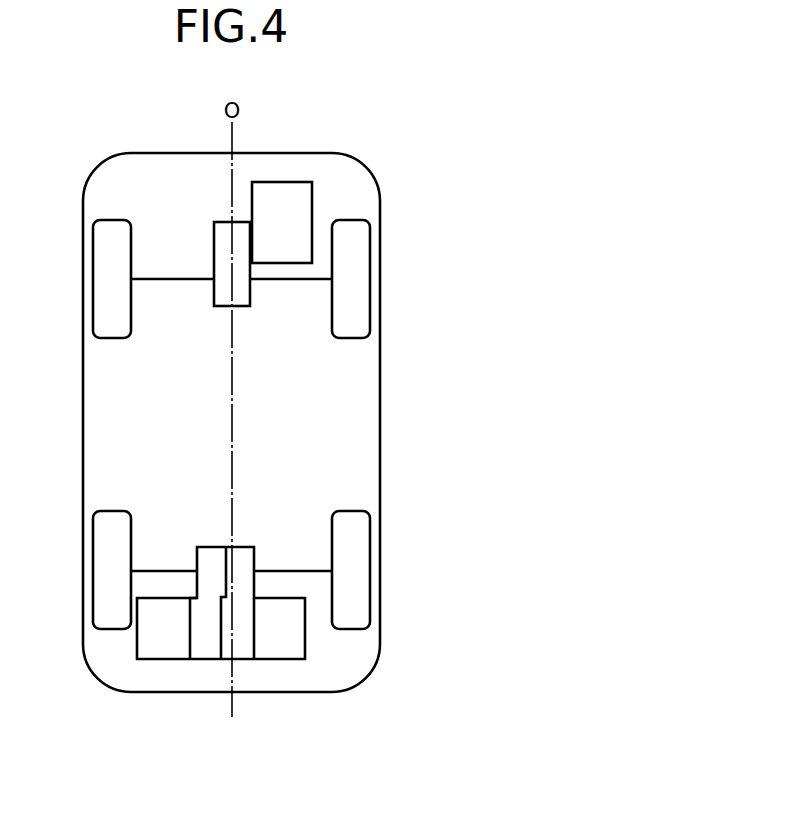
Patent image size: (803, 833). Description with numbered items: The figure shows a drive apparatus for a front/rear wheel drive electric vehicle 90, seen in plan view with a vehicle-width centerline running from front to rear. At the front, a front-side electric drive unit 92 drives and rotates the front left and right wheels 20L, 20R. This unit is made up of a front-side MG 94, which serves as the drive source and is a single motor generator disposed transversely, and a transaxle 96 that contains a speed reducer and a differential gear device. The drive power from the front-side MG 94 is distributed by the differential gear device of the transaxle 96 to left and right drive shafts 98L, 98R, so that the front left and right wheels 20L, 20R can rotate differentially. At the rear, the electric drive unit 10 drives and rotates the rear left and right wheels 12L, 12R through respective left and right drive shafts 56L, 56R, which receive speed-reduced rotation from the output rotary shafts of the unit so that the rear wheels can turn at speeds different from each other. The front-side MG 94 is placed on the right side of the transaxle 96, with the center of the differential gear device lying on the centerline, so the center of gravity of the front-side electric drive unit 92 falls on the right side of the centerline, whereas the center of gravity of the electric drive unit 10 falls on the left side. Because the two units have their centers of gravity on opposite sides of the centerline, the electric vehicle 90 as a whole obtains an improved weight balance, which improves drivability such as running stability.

The electric vehicle 90 is at (403, 135).
The front-side electric drive unit 92 is at (207, 191).
The front-side MG 94 is at (282, 195).
The transaxle 96 is at (225, 288).
The left drive shaft 98L is at (170, 277).
The right drive shaft 98R is at (292, 282).
The front left wheel 20L is at (107, 262).
The front right wheel 20R is at (355, 262).
The rear left wheel 12L is at (107, 545).
The rear right wheel 12R is at (355, 545).
The left drive shaft 56L is at (170, 569).
The right drive shaft 56R is at (288, 569).
The electric drive unit 10 is at (179, 665).